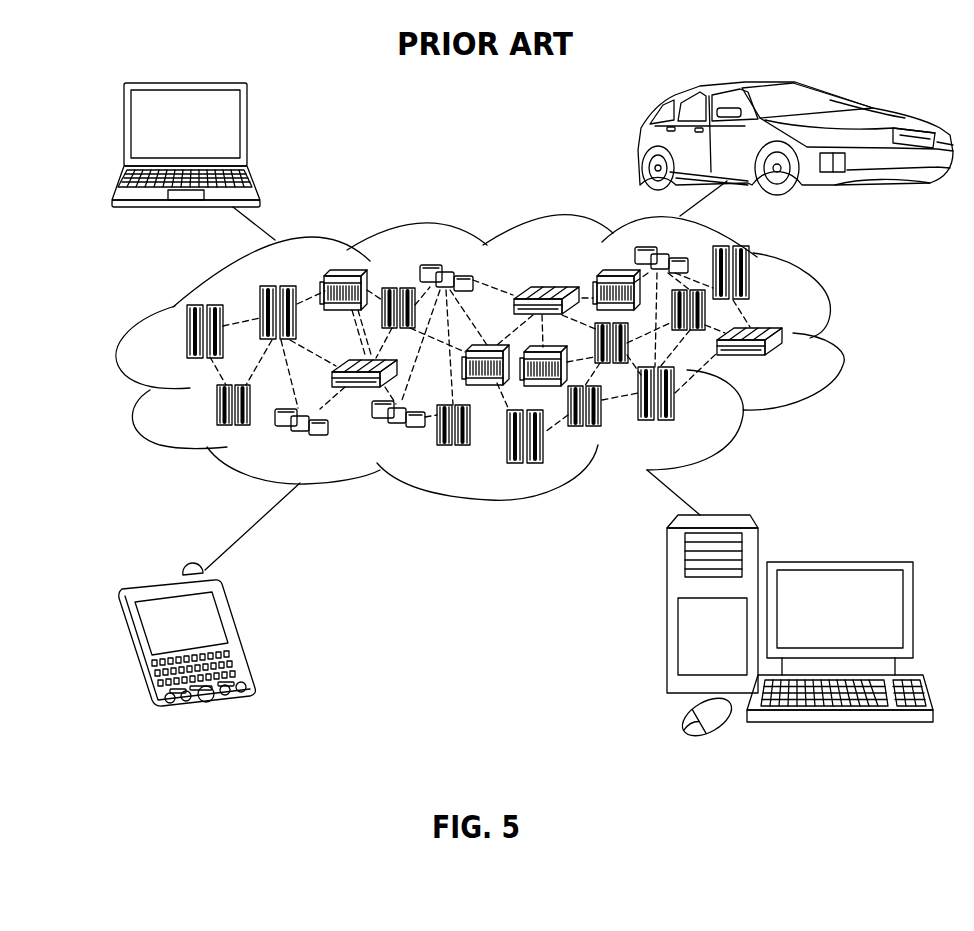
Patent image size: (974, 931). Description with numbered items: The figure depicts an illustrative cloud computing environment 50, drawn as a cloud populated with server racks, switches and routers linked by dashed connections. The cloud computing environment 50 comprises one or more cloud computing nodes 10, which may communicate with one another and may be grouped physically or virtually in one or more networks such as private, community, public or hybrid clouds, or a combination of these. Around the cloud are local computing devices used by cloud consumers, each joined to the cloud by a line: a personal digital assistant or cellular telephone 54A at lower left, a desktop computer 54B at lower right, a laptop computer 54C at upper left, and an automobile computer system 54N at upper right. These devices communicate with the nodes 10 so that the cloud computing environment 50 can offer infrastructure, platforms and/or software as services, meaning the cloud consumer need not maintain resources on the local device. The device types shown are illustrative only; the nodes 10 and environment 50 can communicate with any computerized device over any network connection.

The cloud computing nodes 10 is at (504, 358).
The cloud computing environment 50 is at (840, 338).
The personal digital assistant (PDA) or cellular telephone 54A is at (240, 633).
The desktop computer 54B is at (840, 562).
The laptop computer 54C is at (248, 128).
The automobile computer system 54N is at (640, 142).